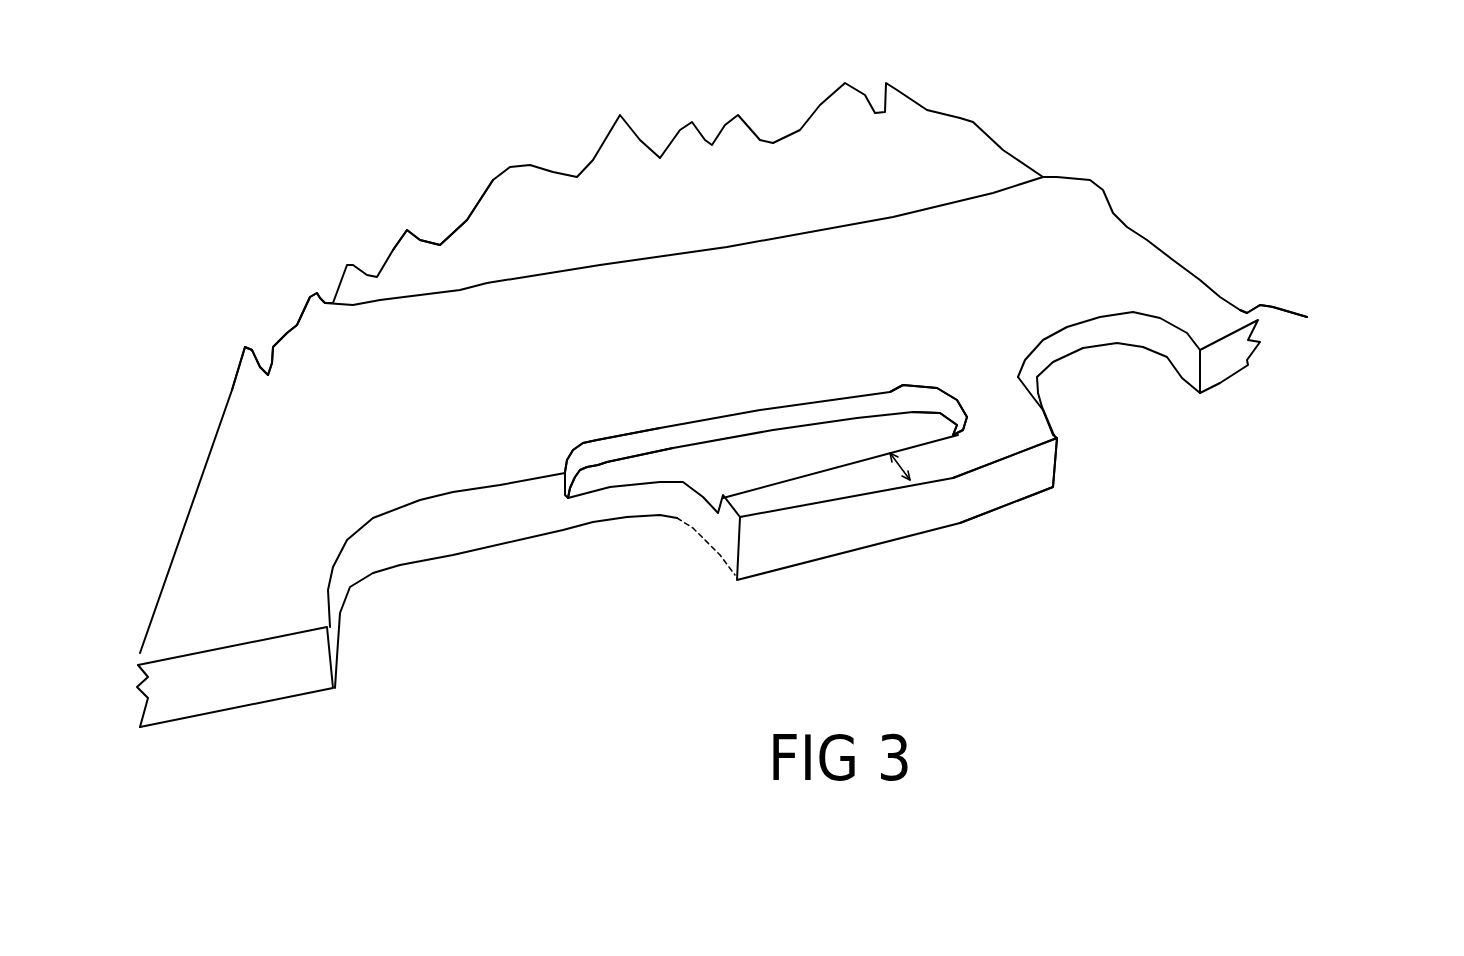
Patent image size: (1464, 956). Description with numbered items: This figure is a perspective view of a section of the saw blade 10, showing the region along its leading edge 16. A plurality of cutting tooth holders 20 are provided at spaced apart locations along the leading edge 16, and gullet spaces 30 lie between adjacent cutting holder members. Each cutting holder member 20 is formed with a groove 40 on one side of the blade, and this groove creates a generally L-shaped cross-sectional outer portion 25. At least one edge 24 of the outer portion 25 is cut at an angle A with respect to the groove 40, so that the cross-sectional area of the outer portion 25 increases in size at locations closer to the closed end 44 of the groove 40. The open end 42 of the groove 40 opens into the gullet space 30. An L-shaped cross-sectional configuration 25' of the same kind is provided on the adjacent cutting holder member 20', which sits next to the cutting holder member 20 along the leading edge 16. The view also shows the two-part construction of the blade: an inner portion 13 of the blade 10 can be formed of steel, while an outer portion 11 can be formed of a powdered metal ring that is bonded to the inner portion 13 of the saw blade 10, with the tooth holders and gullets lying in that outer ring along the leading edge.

The saw blade 10 is at (1080, 237).
The outer portion 11 is at (307, 357).
The inner portion 13 is at (473, 242).
The leading edge 16 is at (252, 678).
The cutting tooth holder 20 is at (1047, 515).
The cutting holder member 20' is at (1342, 304).
The edge 24 is at (850, 527).
The outer portion 25 is at (654, 590).
The L shaped cross-sectional configuration 25' is at (1266, 398).
The gullet space 30 is at (487, 522).
The groove 40 is at (793, 457).
The open end 42 is at (600, 462).
The closed end 44 is at (947, 385).
The angle A is at (910, 462).